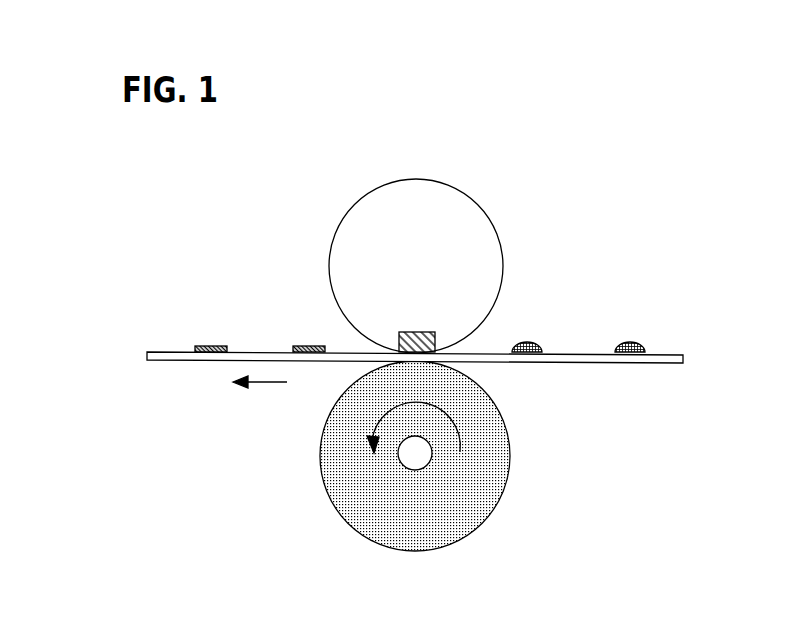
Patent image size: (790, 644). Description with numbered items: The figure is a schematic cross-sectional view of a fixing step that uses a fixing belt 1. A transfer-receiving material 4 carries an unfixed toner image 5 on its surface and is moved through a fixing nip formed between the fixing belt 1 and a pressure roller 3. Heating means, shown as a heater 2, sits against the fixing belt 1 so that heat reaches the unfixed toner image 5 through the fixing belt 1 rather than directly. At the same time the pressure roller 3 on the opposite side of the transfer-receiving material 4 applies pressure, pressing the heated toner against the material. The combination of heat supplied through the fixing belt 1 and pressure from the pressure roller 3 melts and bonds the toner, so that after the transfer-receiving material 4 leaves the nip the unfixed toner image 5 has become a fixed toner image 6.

The fixing belt 1 is at (472, 203).
The heating means (heater) 2 is at (430, 333).
The pressure roller 3 is at (495, 478).
The transfer-receiving material 4 is at (590, 365).
The unfixed toner image 5 is at (633, 344).
The fixed toner image 6 is at (211, 345).